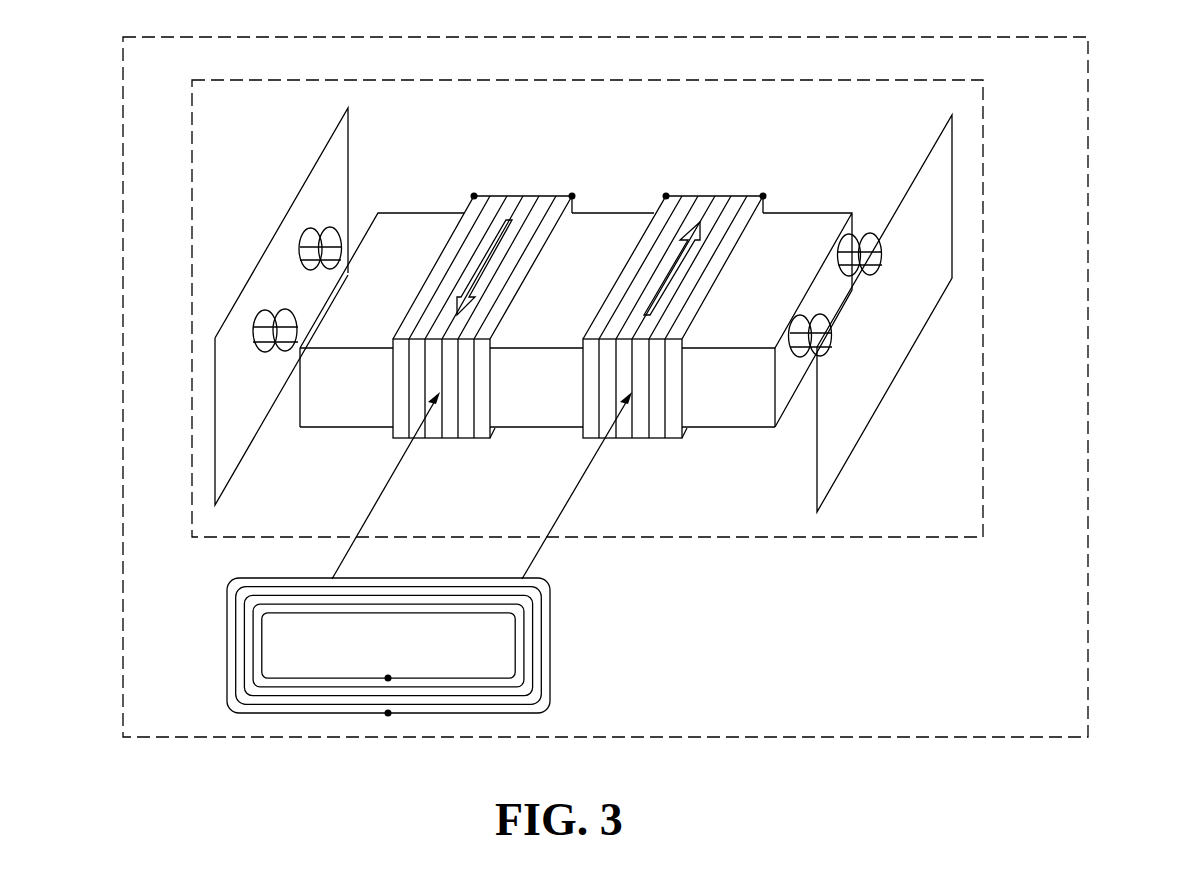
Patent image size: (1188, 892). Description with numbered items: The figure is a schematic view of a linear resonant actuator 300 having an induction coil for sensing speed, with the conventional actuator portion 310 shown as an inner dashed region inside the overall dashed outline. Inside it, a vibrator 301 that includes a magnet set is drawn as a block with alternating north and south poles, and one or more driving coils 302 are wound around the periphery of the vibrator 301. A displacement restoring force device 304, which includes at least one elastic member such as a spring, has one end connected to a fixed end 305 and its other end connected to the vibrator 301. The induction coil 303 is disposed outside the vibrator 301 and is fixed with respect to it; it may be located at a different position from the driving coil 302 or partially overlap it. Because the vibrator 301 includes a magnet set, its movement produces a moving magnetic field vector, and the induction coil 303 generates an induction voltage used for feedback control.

The electromagnetic apparatus 300 is at (1088, 385).
The magnet assembly 310 is at (983, 306).
The vibrator 301 is at (328, 428).
The driving coil 302 is at (530, 196).
The induction coil 303 is at (550, 643).
The displacement restoring force device 304 is at (308, 228).
The fixed end 305 is at (952, 197).